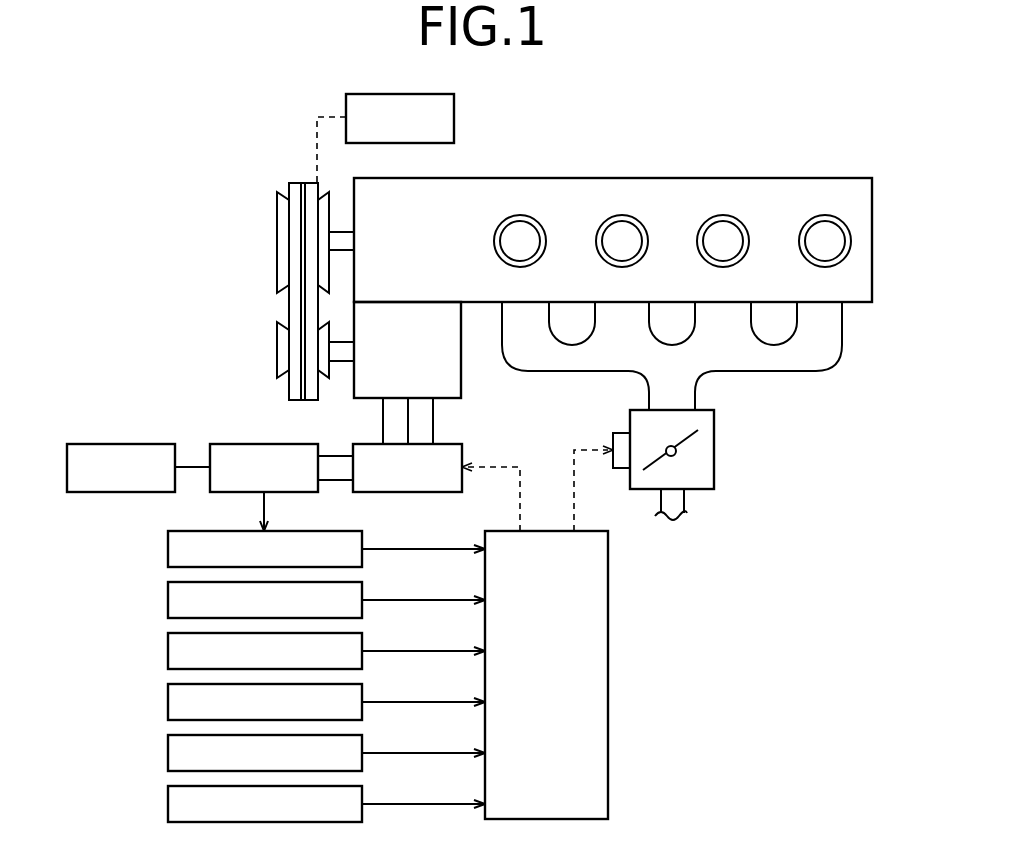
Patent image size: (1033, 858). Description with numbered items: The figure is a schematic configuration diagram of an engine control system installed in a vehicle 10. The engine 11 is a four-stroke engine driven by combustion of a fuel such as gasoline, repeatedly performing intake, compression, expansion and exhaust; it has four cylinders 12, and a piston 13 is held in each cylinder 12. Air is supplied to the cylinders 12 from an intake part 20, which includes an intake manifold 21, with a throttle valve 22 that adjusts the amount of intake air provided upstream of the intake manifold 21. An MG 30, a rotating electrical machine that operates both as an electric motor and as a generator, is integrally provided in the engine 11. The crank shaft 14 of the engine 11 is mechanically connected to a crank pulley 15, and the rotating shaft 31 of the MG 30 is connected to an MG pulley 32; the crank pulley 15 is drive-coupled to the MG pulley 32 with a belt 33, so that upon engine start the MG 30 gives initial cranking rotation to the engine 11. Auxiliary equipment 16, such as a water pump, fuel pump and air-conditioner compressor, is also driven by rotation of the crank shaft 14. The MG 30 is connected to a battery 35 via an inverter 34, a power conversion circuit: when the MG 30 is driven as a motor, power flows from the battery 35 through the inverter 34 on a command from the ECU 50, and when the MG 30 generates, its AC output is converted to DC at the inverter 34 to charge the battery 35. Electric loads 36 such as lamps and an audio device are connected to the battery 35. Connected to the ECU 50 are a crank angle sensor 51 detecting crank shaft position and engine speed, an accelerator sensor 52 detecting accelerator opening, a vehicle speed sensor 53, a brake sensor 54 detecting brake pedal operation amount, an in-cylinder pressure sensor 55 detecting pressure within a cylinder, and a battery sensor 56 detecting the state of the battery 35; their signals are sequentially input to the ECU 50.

The vehicle 10 is at (849, 140).
The engine 11 is at (613, 178).
The cylinder 12 is at (501, 225).
The piston 13 is at (501, 257).
The crank shaft 14 is at (346, 230).
The crank pulley 15 is at (277, 214).
The auxiliary equipment 16 is at (455, 116).
The intake part 20 is at (843, 327).
The intake manifold 21 is at (783, 372).
The throttle valve 22 is at (714, 438).
The MG 30 is at (461, 388).
The rotating shaft 31 is at (340, 363).
The MG pulley 32 is at (277, 348).
The belt 33 is at (289, 305).
The inverter 34 is at (408, 492).
The battery 35 is at (228, 444).
The electric loads 36 is at (83, 444).
The ECU 50 is at (608, 583).
The crank angle sensor 51 is at (168, 600).
The accelerator sensor 52 is at (168, 651).
The vehicle speed sensor 53 is at (168, 702).
The brake sensor 54 is at (168, 753).
The in-cylinder pressure sensor 55 is at (168, 804).
The battery sensor 56 is at (168, 549).